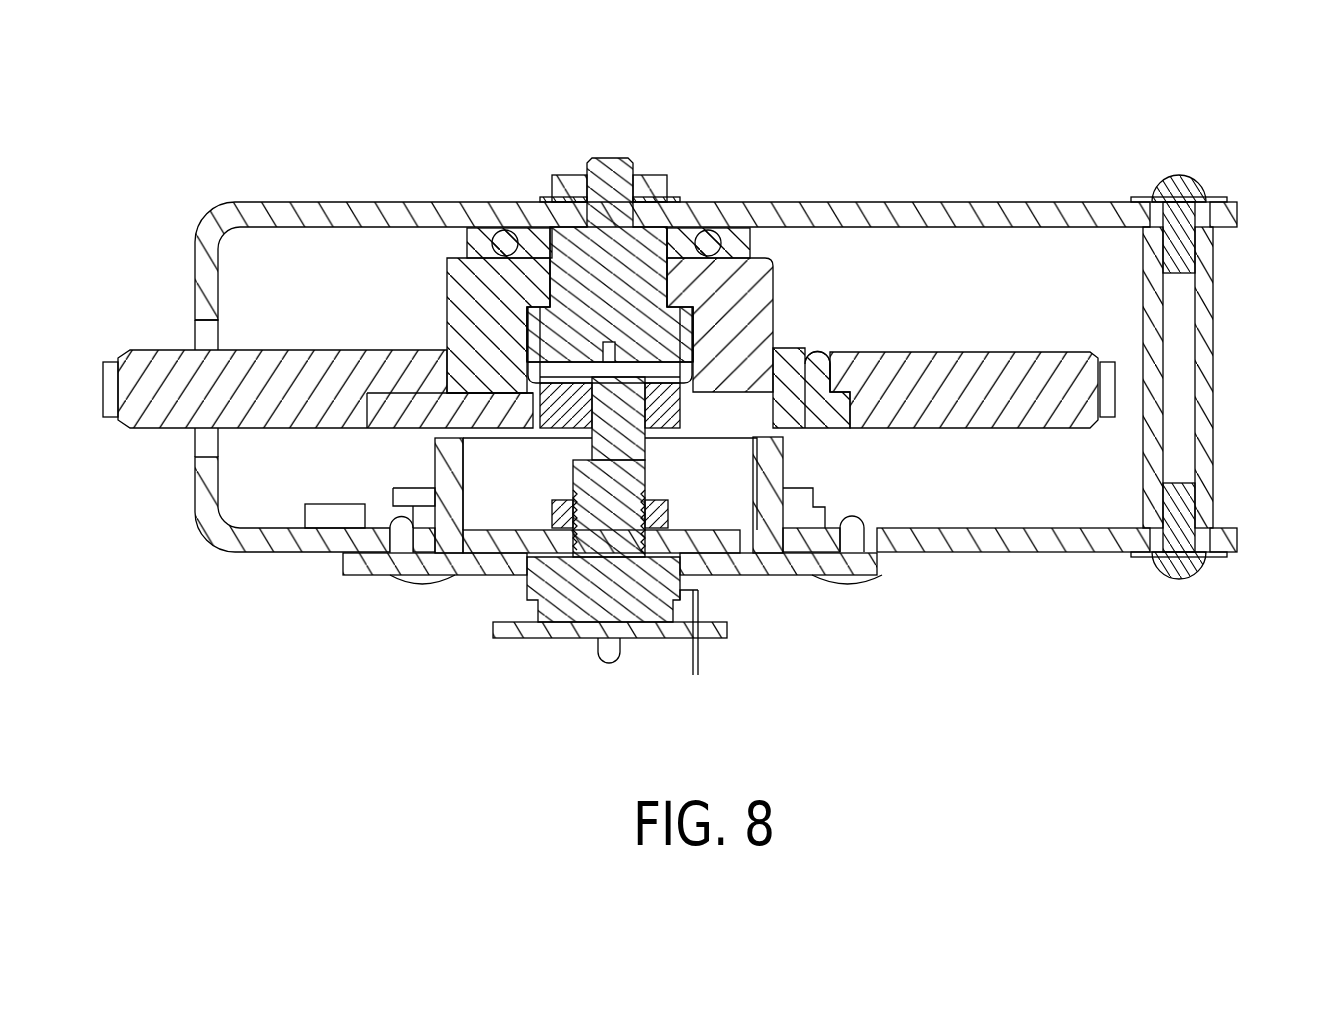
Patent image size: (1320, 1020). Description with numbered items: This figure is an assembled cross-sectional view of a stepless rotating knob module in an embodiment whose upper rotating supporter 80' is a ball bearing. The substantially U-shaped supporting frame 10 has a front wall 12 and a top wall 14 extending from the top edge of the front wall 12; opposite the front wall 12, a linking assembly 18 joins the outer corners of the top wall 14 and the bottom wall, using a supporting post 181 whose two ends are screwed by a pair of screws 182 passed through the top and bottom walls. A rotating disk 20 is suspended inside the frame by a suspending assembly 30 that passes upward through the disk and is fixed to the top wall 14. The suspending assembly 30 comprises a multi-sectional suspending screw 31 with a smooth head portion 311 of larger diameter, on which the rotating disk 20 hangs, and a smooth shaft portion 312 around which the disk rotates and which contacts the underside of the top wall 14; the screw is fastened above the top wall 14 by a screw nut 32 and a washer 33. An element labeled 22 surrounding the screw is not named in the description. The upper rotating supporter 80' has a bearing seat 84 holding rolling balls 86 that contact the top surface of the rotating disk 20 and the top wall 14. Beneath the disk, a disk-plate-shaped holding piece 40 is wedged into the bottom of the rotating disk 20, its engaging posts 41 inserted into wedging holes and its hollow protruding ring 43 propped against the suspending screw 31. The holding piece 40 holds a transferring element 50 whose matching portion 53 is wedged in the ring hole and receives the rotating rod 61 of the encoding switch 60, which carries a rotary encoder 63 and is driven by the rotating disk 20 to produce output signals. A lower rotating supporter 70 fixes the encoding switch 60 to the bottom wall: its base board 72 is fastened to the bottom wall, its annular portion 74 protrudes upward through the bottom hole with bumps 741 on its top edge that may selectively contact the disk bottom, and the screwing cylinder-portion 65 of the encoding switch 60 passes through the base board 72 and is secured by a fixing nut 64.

The supporting frame 10 is at (639, 334).
The front wall 12 is at (205, 263).
The top wall 14 is at (872, 212).
The linking assembly 18 is at (1213, 379).
The supporting post 181 is at (1206, 400).
The screws 182 is at (1192, 190).
The rotating disk 20 is at (1062, 348).
The bushing 22 is at (740, 268).
The suspending assembly 30 is at (605, 187).
The suspending screw 31 is at (630, 155).
The head portion 311 is at (548, 332).
The shaft portion 312 is at (652, 290).
The screw nut 32 is at (642, 185).
The washer 33 is at (680, 199).
The holding piece 40 is at (638, 396).
The engaging posts 41 is at (820, 372).
The protruding ring 43 is at (497, 416).
The transferring element 50 is at (682, 432).
The matching portion 53 is at (528, 388).
The encoding switch 60 is at (627, 546).
The rotating rod 61 is at (618, 392).
The rotary encoder 63 is at (585, 596).
The fixing nut 64 is at (560, 512).
The screwing cylinder-portion 65 is at (655, 515).
The lower rotating supporter 70 is at (573, 553).
The base board 72 is at (372, 565).
The annular portion 74 is at (452, 478).
The bumps 741 is at (440, 439).
The upper rotating supporter 80' is at (585, 196).
The bearing seat 84 is at (484, 247).
The rolling balls 86 is at (508, 243).